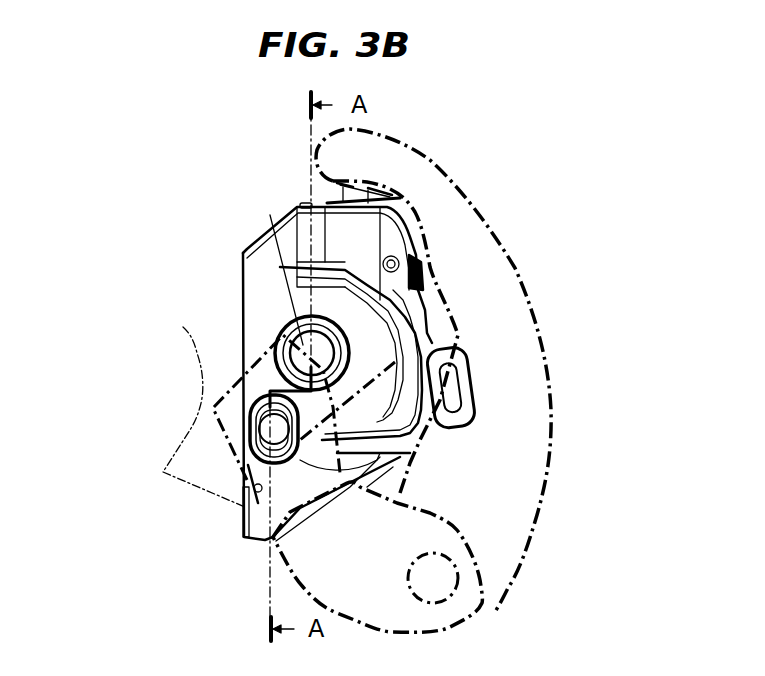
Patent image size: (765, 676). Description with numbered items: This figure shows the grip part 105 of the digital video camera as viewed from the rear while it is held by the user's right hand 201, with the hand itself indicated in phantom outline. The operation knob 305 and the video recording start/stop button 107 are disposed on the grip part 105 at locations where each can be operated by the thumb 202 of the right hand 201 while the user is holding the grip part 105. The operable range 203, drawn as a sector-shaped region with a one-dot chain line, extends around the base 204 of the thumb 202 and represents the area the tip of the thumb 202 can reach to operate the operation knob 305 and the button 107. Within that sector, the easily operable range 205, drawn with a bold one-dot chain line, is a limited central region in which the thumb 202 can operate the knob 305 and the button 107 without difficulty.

The grip part 105 is at (430, 334).
The video recording start/stop button 107 is at (300, 340).
The right hand 201 is at (496, 228).
The thumb 202 is at (297, 580).
The operable range 203 is at (200, 430).
The base of the thumb 204 is at (440, 577).
The easily operable range 205 is at (183, 327).
The operation knob 305 is at (265, 447).